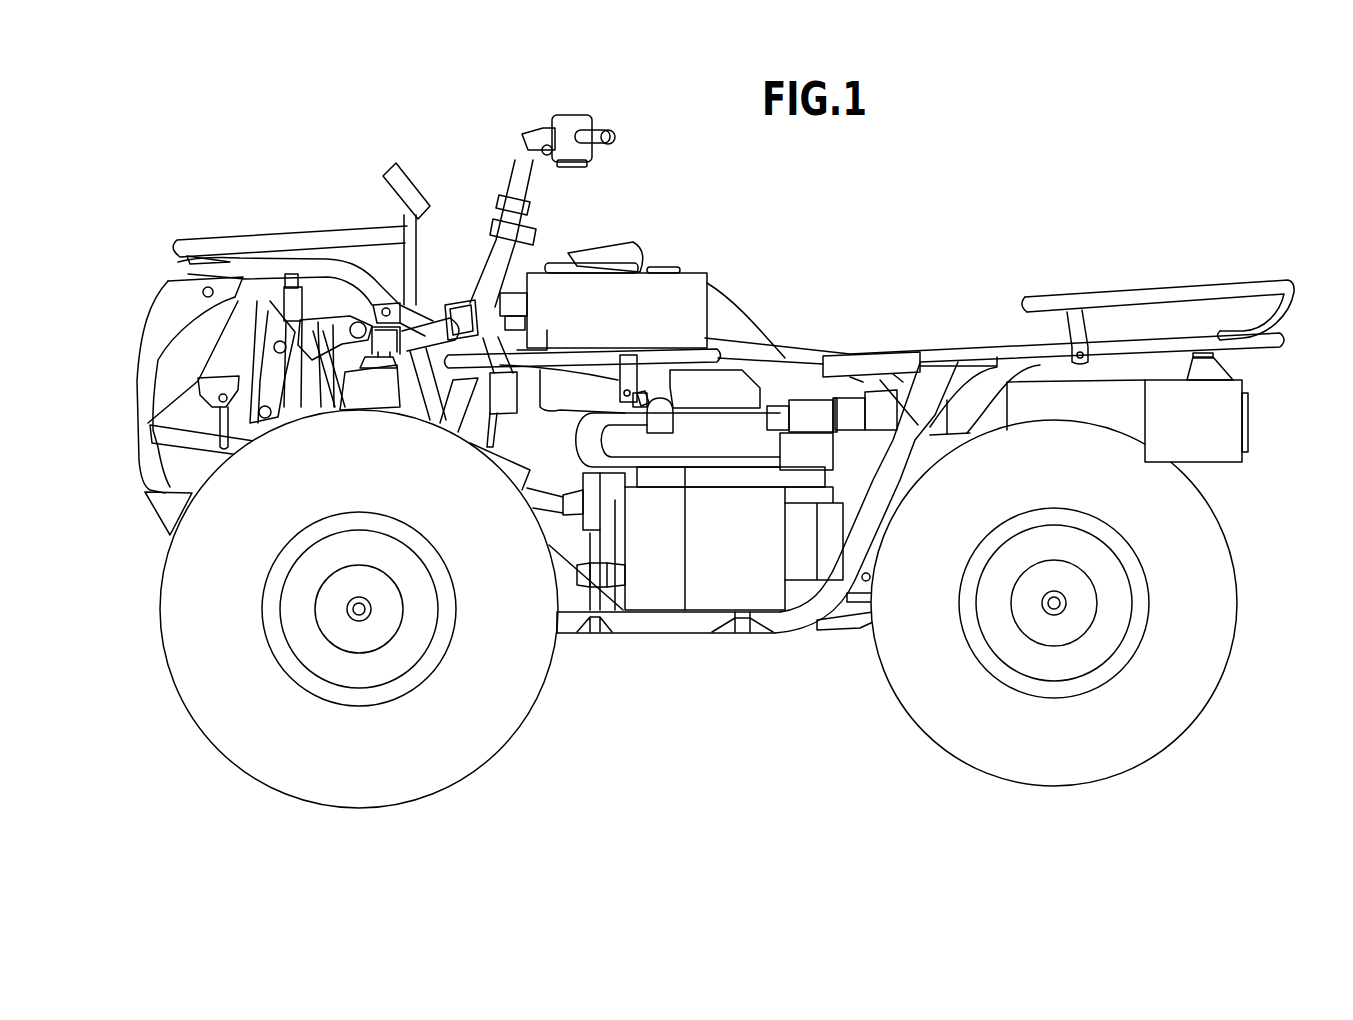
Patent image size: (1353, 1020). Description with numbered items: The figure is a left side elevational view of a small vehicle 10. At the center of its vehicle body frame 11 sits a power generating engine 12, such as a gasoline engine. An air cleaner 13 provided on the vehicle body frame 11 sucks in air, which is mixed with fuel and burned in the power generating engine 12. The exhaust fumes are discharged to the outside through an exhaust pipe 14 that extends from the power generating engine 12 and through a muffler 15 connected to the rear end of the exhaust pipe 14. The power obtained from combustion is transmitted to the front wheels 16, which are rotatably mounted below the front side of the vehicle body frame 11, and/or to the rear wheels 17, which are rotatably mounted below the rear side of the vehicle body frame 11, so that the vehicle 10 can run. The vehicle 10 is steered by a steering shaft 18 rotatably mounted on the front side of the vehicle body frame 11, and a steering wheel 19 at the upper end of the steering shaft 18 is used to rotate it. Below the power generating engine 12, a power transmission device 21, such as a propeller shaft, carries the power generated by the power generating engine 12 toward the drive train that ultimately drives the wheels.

The vehicle 10 is at (867, 232).
The vehicle body frame 11 is at (667, 623).
The power generating engine 12 is at (727, 557).
The air cleaner 13 is at (610, 257).
The exhaust pipe 14 is at (713, 448).
The muffler 15 is at (1167, 393).
The front wheels 16 is at (190, 714).
The rear wheels 17 is at (1190, 724).
The steering shaft 18 is at (482, 252).
The steering wheel 19 is at (594, 135).
The power transmission device 21 is at (587, 573).